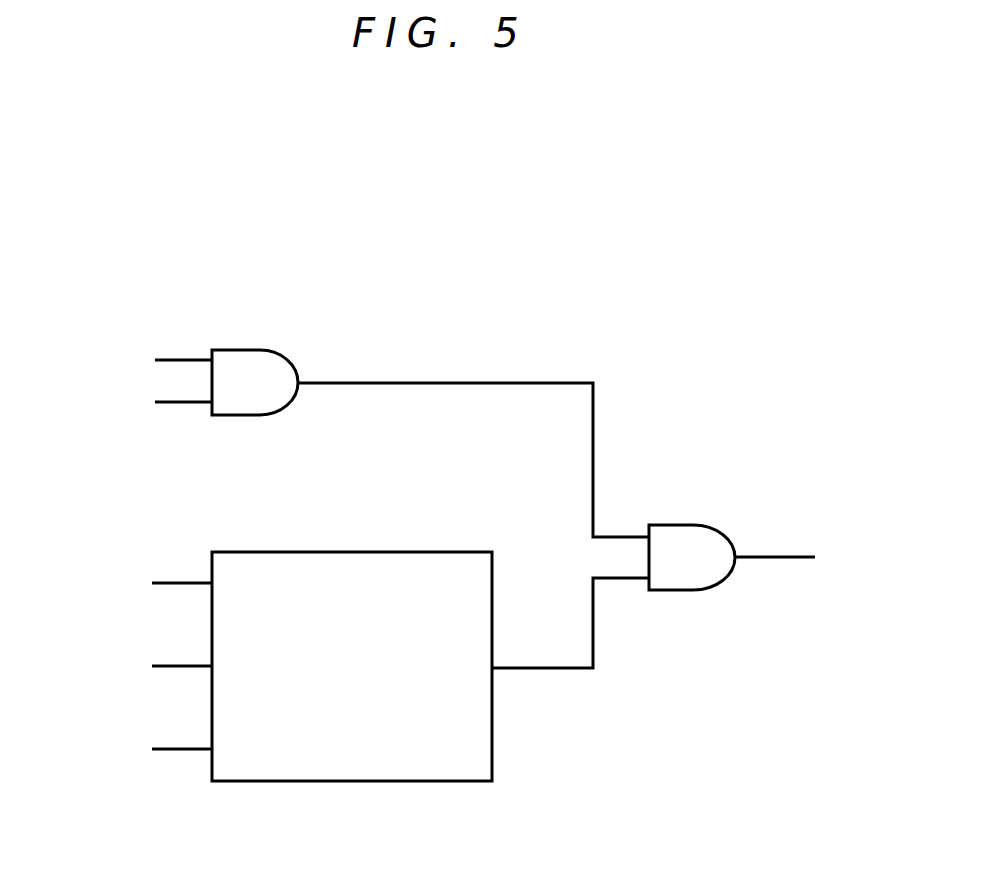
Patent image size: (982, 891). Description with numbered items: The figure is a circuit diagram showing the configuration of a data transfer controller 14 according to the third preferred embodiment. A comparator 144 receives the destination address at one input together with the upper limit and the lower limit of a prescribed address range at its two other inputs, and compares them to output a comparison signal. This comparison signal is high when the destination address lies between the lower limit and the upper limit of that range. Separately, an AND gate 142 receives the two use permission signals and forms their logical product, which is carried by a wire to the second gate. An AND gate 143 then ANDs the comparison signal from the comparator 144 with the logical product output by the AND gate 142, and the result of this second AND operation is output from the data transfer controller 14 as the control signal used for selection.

The data transfer controller 14 is at (104, 240).
The AND gate 142 is at (252, 363).
The AND gate 143 is at (700, 540).
The comparator 144 is at (378, 783).